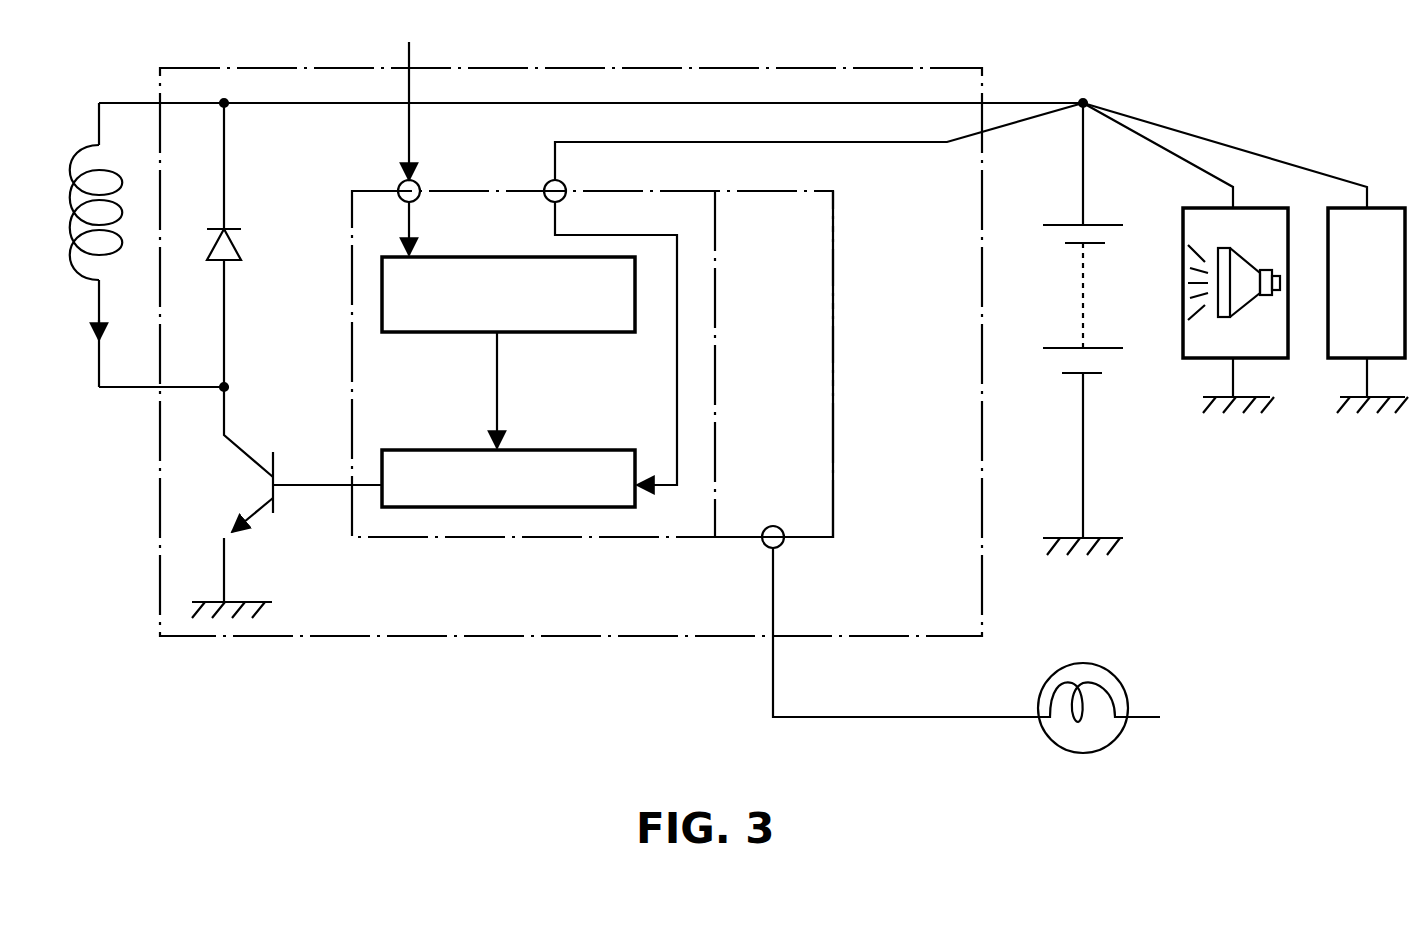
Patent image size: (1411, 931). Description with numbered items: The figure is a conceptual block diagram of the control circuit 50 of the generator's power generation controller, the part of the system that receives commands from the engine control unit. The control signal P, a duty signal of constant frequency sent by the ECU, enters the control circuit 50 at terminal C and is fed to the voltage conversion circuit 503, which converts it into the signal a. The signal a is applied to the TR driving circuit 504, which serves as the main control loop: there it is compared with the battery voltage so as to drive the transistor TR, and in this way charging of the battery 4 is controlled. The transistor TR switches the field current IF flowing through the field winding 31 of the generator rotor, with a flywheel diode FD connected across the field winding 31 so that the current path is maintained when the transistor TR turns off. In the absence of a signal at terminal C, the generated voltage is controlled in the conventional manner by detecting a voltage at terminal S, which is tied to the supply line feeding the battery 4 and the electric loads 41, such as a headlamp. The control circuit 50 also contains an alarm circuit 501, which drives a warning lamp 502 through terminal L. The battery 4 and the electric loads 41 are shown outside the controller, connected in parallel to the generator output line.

The field winding 31 is at (99, 290).
The field current IF is at (158, 414).
The flywheel diode FD is at (236, 225).
The transistor TR is at (238, 445).
The control circuit 50 is at (545, 540).
The alarm circuit 501 is at (820, 445).
The control signal P is at (392, 101).
The terminal C is at (387, 205).
The terminal S is at (798, 294).
The voltage conversion circuit 503 is at (440, 333).
The signal a is at (498, 418).
The TR driving circuit 504 is at (432, 508).
The terminal L is at (900, 621).
The warning lamp 502 is at (1120, 690).
The battery 4 is at (1072, 375).
The electric load 41 is at (1190, 360).